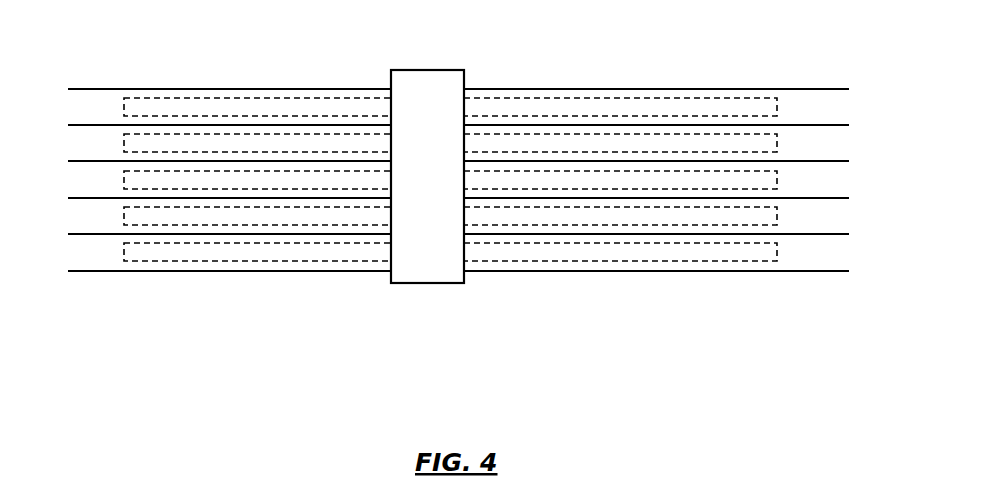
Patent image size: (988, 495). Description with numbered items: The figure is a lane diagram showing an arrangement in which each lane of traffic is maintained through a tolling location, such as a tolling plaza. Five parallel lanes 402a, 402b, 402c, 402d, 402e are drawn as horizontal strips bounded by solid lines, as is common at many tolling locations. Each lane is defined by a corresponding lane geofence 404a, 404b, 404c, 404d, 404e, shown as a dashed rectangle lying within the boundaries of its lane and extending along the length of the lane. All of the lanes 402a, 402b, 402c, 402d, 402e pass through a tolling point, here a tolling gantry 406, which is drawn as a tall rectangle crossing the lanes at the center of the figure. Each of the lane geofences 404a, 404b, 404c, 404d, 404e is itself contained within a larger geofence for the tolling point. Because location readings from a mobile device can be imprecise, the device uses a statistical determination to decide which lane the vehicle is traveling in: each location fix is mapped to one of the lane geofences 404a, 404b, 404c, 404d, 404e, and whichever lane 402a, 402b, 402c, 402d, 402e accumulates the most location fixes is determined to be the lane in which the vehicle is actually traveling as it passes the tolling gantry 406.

The lane 402a is at (846, 106).
The lane 402b is at (846, 142).
The lane 402c is at (846, 188).
The lane 402d is at (838, 215).
The lane 402e is at (854, 253).
The lane geofence 404a is at (124, 106).
The lane geofence 404b is at (124, 147).
The lane geofence 404c is at (124, 181).
The lane geofence 404d is at (124, 215).
The lane geofence 404e is at (124, 252).
The tolling gantry 406 is at (430, 67).